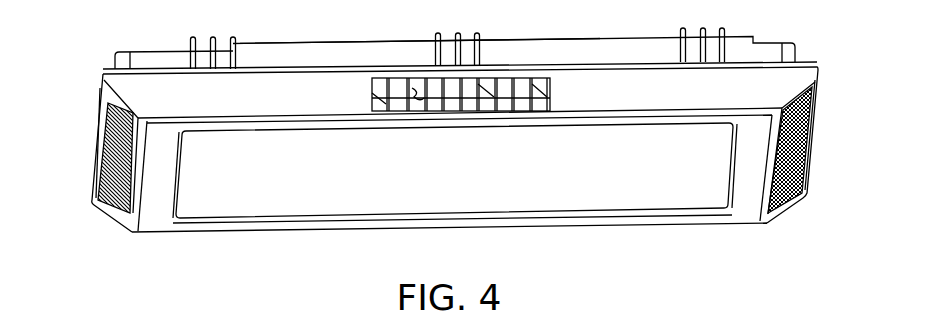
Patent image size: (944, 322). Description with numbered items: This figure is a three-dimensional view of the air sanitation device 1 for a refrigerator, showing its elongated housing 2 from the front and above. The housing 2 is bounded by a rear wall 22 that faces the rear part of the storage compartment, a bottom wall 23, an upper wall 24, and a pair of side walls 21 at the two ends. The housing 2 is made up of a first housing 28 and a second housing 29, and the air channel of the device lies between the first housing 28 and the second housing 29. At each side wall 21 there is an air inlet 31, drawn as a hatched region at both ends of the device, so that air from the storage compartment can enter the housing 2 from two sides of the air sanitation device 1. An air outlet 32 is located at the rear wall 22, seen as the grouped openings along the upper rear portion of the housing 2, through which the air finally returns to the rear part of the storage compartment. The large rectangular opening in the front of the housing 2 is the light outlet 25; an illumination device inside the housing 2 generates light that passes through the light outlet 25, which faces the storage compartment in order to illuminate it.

The air sanitation device 1 is at (601, 21).
The housing 2 is at (777, 70).
The side wall 21 is at (100, 90).
The rear wall 22 is at (601, 80).
The bottom wall 23 is at (167, 220).
The upper wall 24 is at (513, 41).
The light outlet 25 is at (245, 203).
The first housing 28 is at (293, 46).
The second housing 29 is at (752, 217).
The air inlet 31 is at (97, 199).
The air outlet 32 is at (417, 87).